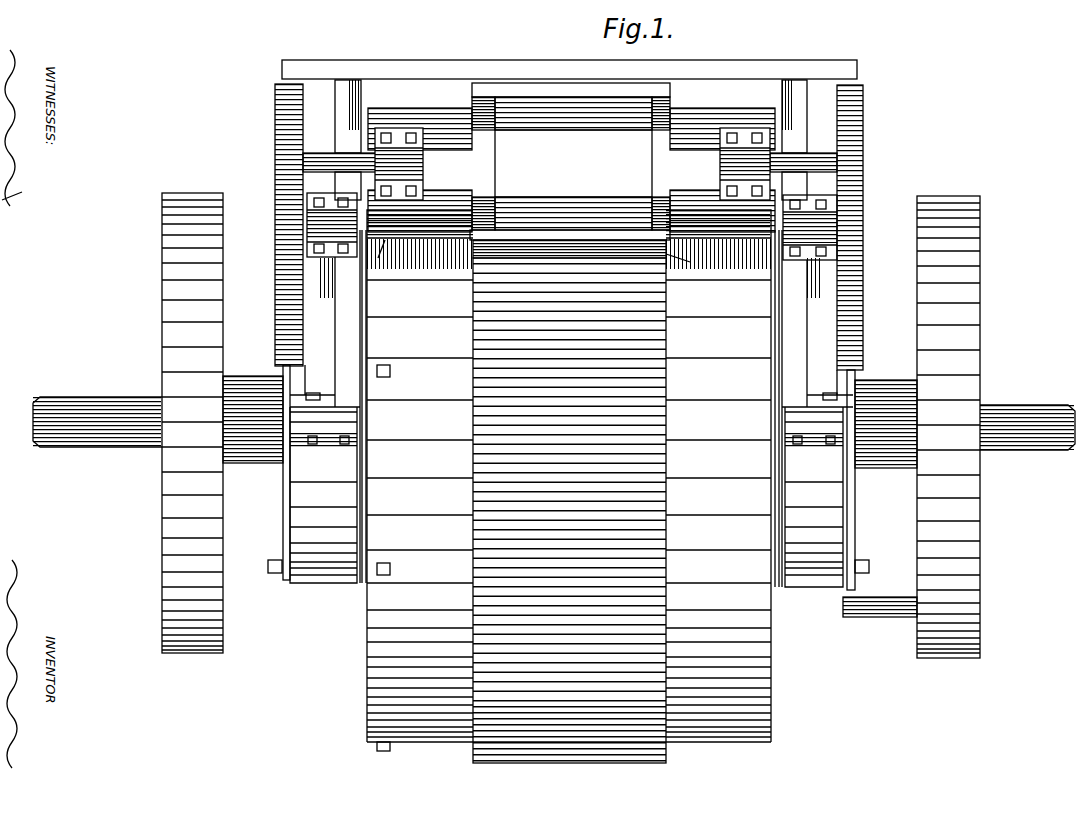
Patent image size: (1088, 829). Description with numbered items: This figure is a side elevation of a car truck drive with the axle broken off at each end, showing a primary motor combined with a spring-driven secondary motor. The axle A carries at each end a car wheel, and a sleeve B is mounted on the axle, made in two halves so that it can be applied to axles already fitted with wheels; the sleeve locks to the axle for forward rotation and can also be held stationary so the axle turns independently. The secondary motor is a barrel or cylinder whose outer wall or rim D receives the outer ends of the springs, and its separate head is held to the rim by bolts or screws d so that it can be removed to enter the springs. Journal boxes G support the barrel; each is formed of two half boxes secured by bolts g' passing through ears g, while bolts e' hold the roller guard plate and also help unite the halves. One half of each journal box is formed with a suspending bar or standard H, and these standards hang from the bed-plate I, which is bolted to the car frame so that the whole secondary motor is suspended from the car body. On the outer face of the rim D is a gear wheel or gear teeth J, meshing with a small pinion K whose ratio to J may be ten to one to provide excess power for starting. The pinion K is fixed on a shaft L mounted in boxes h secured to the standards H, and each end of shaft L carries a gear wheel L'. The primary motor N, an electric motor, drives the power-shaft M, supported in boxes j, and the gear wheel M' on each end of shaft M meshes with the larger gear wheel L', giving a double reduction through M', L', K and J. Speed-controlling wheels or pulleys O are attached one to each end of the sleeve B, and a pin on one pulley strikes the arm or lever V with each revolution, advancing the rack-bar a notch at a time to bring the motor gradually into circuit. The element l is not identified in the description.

The bed-plate I is at (569, 71).
The gear wheel M' is at (572, 227).
The motor or power-shaft M is at (570, 138).
The boxes j is at (470, 160).
The primary motor N is at (570, 161).
The boxes h is at (572, 226).
The outer wall or rim D is at (569, 476).
The gear wheel or gear teeth J is at (569, 501).
The speed-controlling wheels or pulleys O is at (571, 425).
The sleeve B is at (252, 464).
The axle A is at (130, 448).
The suspending bars or standards H is at (571, 408).
The journal boxes G is at (571, 432).
The bolts or screws d is at (410, 762).
The ears g is at (595, 410).
The bolts g' is at (571, 455).
The bolts e' is at (568, 567).
The arm or lever V is at (850, 618).
The shaft L is at (567, 266).
The pin l is at (568, 268).
The small gear wheel or pinion K is at (680, 262).
The gear wheel L' is at (879, 285).